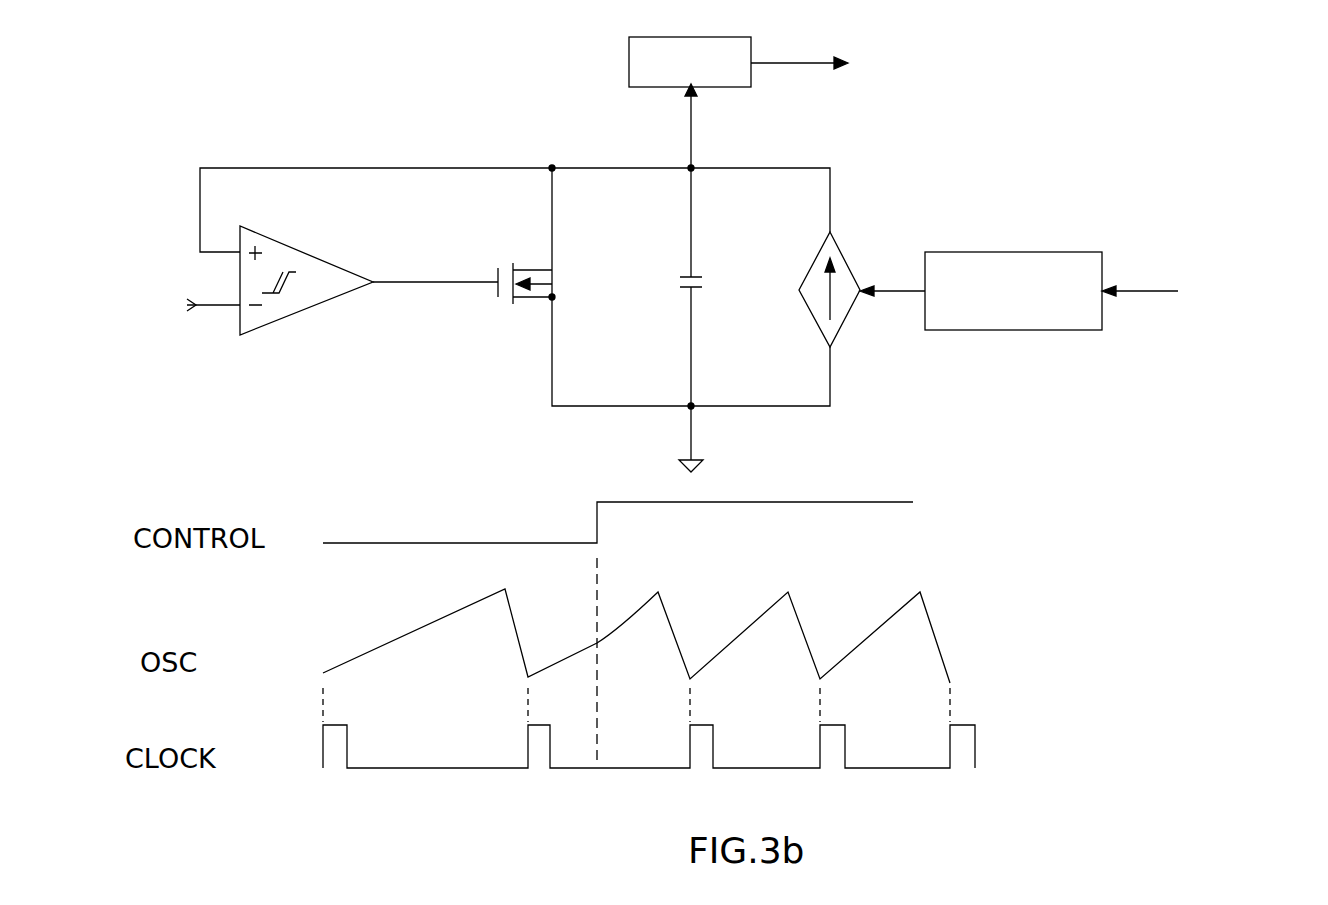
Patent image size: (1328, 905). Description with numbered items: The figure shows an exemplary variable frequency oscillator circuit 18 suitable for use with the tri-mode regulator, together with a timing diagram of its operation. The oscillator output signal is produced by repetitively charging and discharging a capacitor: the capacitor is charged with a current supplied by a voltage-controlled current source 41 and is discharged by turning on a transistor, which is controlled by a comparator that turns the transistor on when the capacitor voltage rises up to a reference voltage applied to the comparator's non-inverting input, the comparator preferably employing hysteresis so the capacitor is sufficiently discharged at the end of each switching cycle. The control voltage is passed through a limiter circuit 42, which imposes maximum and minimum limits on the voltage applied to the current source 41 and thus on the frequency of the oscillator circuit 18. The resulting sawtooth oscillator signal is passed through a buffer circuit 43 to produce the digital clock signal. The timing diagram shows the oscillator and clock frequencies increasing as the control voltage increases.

The variable frequency oscillator circuit 18 is at (430, 87).
The voltage-controlled current source 41 is at (845, 322).
The limiter circuit 42 is at (1012, 330).
The buffer circuit 43 is at (629, 62).